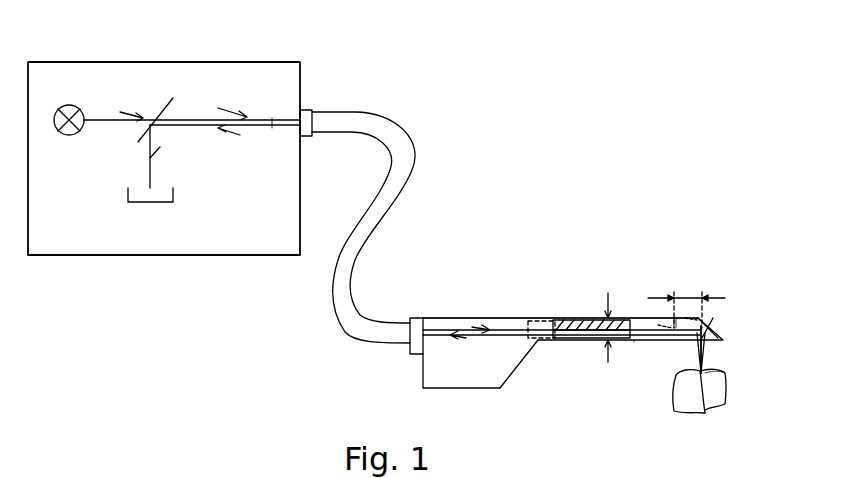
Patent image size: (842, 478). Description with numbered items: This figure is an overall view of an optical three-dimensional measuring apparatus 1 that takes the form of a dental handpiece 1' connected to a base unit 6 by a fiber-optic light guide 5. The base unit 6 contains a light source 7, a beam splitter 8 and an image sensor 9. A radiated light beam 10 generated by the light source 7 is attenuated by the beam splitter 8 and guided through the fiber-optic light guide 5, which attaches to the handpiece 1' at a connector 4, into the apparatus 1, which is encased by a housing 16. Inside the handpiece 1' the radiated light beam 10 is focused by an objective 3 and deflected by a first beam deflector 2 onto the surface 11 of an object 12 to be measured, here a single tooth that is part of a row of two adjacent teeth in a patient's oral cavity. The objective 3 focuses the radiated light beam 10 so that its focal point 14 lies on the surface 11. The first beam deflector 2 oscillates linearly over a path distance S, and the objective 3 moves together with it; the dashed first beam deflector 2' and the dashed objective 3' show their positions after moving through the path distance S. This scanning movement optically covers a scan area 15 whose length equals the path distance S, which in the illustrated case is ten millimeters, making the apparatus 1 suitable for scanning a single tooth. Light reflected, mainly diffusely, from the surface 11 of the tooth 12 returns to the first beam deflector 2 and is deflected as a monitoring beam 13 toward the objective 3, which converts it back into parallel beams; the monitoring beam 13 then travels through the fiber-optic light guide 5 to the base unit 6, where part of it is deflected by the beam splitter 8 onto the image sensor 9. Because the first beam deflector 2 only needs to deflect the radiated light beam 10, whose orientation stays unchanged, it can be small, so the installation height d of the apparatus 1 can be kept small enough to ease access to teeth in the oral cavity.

The optical 3D measuring apparatus 1 is at (572, 281).
The dental handpiece 1' is at (560, 277).
The first beam deflector 2 is at (715, 300).
The first beam deflector (displaced position) 2' is at (693, 277).
The objective 3 is at (591, 295).
The objective (displaced position) 3' is at (548, 295).
The connector 4 is at (415, 352).
The fiber-optic light guide 5 is at (355, 320).
The base unit 6 is at (222, 62).
The light source 7 is at (69, 105).
The beam splitter 8 is at (170, 100).
The image sensor 9 is at (175, 195).
The radiated light beam 10 is at (200, 119).
The surface 11 is at (710, 376).
The object to be measured 12 is at (680, 397).
The monitoring beam 13 is at (273, 128).
The focal point 14 is at (707, 408).
The scan area 15 is at (688, 370).
The housing 16 is at (467, 390).
The path distance S is at (685, 301).
The installation height d is at (601, 332).